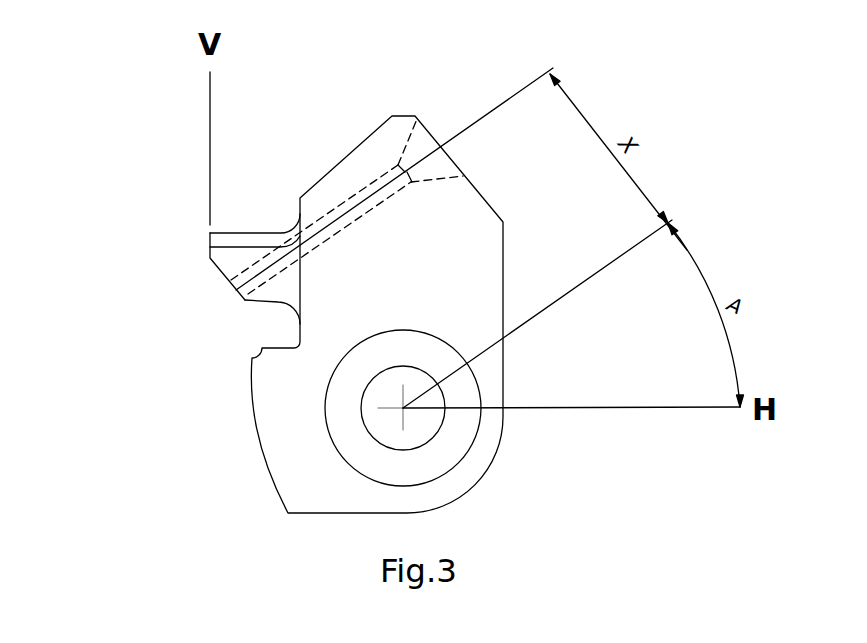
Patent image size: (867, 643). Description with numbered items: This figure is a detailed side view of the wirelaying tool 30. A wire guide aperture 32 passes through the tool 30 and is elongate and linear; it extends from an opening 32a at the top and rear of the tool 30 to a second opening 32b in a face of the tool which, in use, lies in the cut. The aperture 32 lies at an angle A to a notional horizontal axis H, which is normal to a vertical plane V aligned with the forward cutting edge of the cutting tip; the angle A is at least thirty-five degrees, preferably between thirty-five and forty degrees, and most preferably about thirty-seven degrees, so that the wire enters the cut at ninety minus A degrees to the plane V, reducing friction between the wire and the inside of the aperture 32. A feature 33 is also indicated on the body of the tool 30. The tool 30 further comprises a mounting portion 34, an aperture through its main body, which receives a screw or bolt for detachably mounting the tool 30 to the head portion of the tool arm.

The wirelaying tool 30 is at (282, 448).
The wire guide aperture 32 is at (362, 188).
The opening 32a is at (422, 150).
The second opening 32b is at (228, 283).
The notch 33 is at (263, 362).
The mounting portion 34 is at (418, 431).